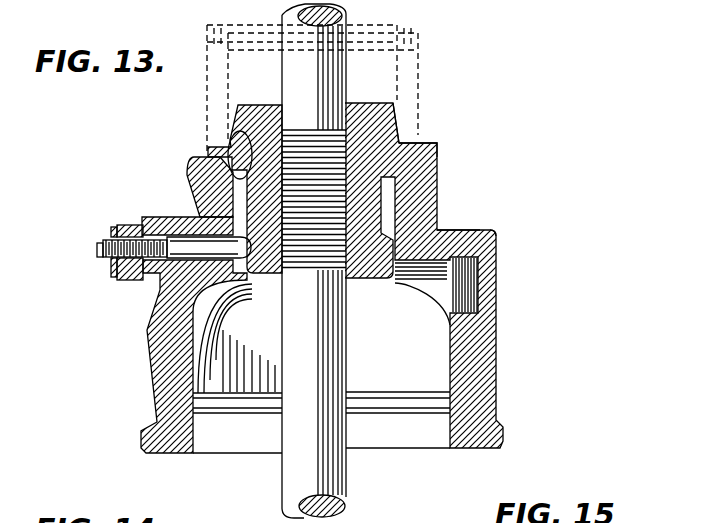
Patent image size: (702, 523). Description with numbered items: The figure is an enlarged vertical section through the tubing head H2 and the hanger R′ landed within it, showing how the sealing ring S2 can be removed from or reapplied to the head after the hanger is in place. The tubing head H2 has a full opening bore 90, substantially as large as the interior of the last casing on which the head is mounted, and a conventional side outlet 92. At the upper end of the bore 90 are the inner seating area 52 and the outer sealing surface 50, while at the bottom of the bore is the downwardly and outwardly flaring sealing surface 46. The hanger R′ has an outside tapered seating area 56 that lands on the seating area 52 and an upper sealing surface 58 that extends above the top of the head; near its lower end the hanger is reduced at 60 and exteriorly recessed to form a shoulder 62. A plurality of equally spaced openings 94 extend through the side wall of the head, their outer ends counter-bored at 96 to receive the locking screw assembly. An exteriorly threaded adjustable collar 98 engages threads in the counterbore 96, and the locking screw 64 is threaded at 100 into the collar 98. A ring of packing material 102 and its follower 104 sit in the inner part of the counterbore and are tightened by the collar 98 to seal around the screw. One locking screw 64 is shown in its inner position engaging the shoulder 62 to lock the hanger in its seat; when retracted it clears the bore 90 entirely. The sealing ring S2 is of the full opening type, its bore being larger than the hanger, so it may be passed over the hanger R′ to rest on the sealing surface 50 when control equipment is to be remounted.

The sealing surface 46 is at (437, 448).
The outer sealing surface 50 is at (440, 157).
The inner seating area 52 is at (430, 180).
The outside tapered seating area 56 is at (228, 127).
The upper sealing surface 58 is at (400, 89).
The reduced portion 60 is at (440, 222).
The shoulder 62 is at (440, 227).
The locking screw 64 is at (226, 240).
The bore 90 is at (430, 226).
The side outlet 92 is at (475, 276).
The openings 94 is at (140, 332).
The counterbore 96 is at (165, 291).
The adjustable collar 98 is at (130, 222).
The threads 100 is at (113, 266).
The ring of packing material 102 is at (190, 158).
The follower 104 is at (187, 219).
The sealing ring S2 is at (406, 34).
The hanger R′ is at (400, 118).
The tubing head H2 is at (494, 233).